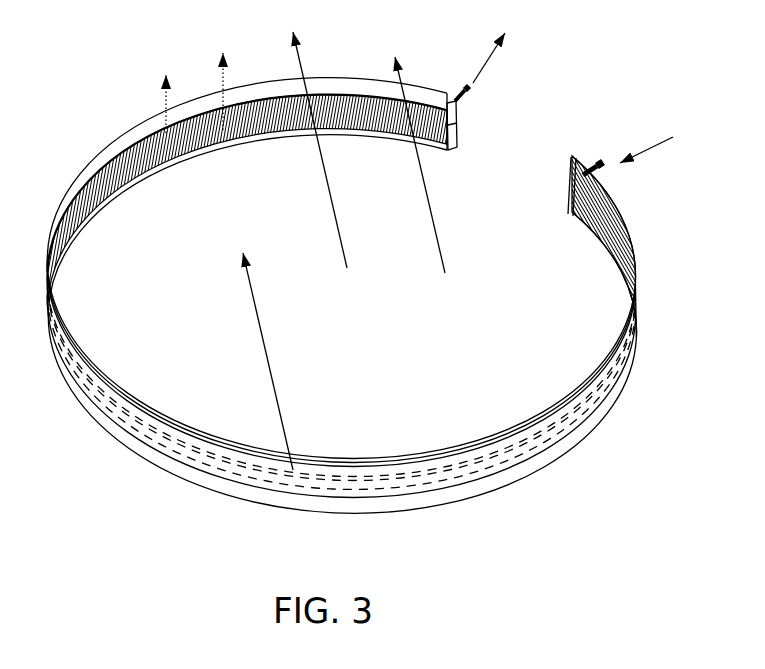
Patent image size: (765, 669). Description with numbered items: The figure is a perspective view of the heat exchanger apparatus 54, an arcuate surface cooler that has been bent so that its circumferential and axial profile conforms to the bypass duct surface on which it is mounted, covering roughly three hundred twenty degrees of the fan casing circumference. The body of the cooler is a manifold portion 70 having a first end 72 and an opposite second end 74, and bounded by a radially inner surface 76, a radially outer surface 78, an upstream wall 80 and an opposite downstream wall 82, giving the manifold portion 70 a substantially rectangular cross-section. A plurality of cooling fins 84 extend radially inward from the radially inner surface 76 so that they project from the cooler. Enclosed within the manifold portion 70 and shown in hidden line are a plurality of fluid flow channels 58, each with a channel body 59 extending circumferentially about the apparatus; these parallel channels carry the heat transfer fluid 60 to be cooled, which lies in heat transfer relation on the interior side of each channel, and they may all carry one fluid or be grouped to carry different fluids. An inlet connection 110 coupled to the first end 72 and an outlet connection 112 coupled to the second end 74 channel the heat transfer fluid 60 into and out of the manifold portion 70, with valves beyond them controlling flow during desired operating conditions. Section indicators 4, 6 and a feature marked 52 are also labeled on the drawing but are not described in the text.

The section line for FIG. 4 is at (162, 92).
The section line for FIG. 6 is at (221, 81).
The band 52 is at (312, 148).
The heat exchanger apparatus 54 is at (597, 98).
The fluid flow channels 58 is at (455, 498).
The channel body 59 is at (465, 496).
The heat transfer fluid 60 is at (257, 444).
The manifold portion 70 is at (565, 198).
The first end 72 is at (567, 183).
The second end 74 is at (457, 121).
The radially inner surface 76 is at (457, 139).
The radially outer surface 78 is at (533, 480).
The upstream wall 80 is at (453, 150).
The downstream wall 82 is at (454, 100).
The cooling fins 84 is at (265, 127).
The inlet connection 110 is at (612, 173).
The outlet connection 112 is at (472, 93).